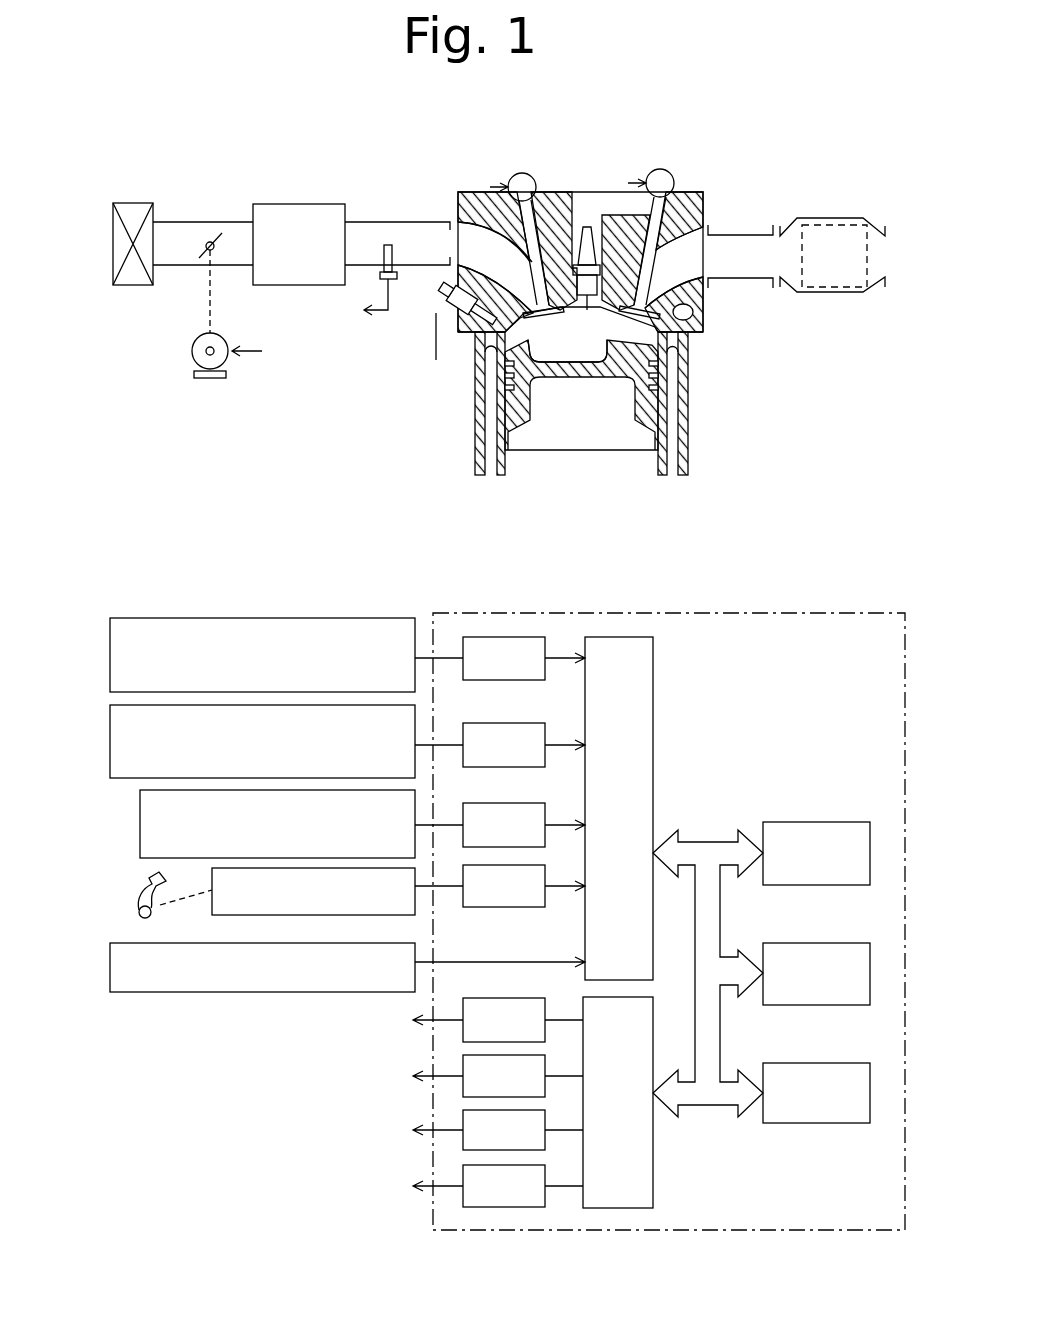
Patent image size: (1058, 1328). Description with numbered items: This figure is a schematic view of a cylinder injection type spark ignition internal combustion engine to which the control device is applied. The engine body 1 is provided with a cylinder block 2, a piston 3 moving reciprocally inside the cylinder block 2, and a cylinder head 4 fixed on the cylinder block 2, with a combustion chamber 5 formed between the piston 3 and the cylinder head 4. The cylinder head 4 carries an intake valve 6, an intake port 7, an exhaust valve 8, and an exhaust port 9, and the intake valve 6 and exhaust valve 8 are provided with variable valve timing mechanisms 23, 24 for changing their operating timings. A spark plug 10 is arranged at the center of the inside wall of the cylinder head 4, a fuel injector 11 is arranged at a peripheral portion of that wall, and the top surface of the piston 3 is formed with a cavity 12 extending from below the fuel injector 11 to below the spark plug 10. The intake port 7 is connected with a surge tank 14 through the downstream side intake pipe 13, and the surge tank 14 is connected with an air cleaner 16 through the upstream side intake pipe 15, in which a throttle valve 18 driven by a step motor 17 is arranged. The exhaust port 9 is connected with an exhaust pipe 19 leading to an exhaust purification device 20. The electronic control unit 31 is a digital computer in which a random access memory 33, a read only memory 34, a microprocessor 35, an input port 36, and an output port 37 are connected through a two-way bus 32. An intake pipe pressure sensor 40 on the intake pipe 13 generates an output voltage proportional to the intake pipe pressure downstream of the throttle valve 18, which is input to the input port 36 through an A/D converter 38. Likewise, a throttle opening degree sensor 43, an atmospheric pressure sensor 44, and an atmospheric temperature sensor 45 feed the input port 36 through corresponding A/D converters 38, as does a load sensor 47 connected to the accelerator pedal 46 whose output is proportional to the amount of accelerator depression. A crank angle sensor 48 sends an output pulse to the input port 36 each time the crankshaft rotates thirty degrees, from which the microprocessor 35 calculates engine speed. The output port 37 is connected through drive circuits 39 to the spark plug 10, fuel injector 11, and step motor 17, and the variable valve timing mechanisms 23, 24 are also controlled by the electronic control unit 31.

The engine body 1 is at (465, 432).
The cylinder block 2 is at (690, 402).
The piston 3 is at (523, 397).
The cylinder head 4 is at (686, 205).
The combustion chamber 5 is at (648, 340).
The intake valve 6 is at (548, 208).
The intake port 7 is at (488, 212).
The exhaust valve 8 is at (637, 203).
The exhaust port 9 is at (700, 210).
The spark plug 10 is at (591, 218).
The fuel injector 11 is at (446, 318).
The cavity 12 is at (520, 347).
The downstream side intake pipe 13 is at (418, 233).
The surge tank 14 is at (292, 273).
The upstream side intake pipe 15 is at (182, 240).
The air cleaner 16 is at (128, 212).
The step motor 17 is at (192, 350).
The throttle valve 18 is at (215, 225).
The exhaust pipe 19 is at (760, 245).
The exhaust purification device 20 is at (843, 247).
The variable valve timing mechanism 23 is at (520, 173).
The variable valve timing mechanism 24 is at (659, 170).
The electronic control unit 31 is at (822, 608).
The two-way bus 32 is at (713, 838).
The random access memory 33 is at (817, 822).
The read only memory 34 is at (817, 943).
The microprocessor 35 is at (835, 1063).
The input port 36 is at (653, 733).
The output port 37 is at (653, 1163).
The A/D converter 38 is at (505, 907).
The drive circuit 39 is at (483, 1207).
The intake pipe pressure sensor 40 is at (383, 252).
The throttle opening degree sensor 43 is at (110, 649).
The atmospheric pressure sensor 44 is at (140, 816).
The atmospheric temperature sensor 45 is at (110, 732).
The accelerator pedal 46 is at (136, 905).
The load sensor 47 is at (212, 912).
The crank angle sensor 48 is at (170, 992).